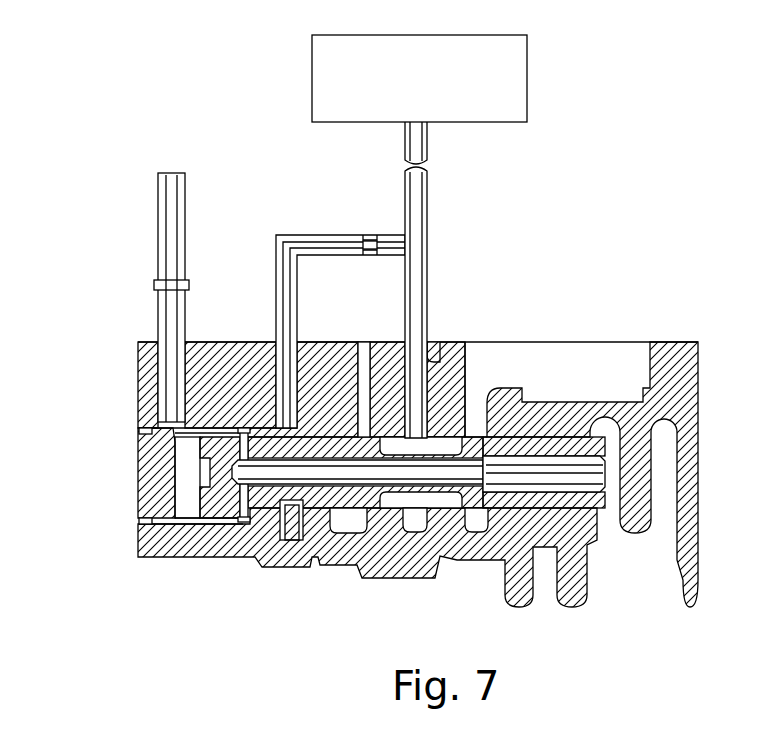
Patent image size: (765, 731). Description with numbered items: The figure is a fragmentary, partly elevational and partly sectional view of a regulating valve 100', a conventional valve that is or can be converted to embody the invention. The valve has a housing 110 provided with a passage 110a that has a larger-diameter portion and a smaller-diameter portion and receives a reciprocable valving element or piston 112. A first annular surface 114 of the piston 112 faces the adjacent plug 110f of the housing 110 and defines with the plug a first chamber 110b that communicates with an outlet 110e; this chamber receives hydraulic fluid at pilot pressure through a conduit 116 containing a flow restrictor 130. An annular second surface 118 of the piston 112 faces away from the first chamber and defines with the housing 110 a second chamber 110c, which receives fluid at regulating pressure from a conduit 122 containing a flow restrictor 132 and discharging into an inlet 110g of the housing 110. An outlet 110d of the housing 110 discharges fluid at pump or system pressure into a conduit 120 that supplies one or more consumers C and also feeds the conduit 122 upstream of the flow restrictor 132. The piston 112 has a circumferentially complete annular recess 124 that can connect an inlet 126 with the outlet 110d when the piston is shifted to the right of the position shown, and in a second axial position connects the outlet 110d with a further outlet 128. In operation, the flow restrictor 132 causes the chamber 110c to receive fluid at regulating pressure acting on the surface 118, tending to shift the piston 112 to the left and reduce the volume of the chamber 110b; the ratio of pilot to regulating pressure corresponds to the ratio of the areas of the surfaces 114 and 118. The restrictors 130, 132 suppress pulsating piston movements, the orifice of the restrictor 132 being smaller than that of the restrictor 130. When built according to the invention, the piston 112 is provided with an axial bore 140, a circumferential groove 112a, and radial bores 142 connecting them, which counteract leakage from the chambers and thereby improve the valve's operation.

The housing 110 is at (393, 577).
The passage 110a is at (212, 337).
The first chamber 110b is at (160, 420).
The second chamber 110c is at (297, 540).
The outlet 110d is at (443, 337).
The outlet 110e is at (138, 360).
The plug 110f is at (145, 503).
The inlet 110g is at (315, 337).
The piston 112 is at (243, 500).
The circumferential groove 112a is at (205, 437).
The first annular surface 114 is at (202, 520).
The conduit 116 is at (175, 212).
The second annular surface 118 is at (288, 508).
The conduit 120 is at (420, 200).
The conduit 122 is at (283, 293).
The annular recess 124 is at (443, 497).
The inlet 126 is at (483, 337).
The outlet 128 is at (345, 337).
The flow restrictor 130 is at (162, 288).
The flow restrictor 132 is at (370, 233).
The axial bore 140 is at (528, 478).
The radial bores 142 is at (212, 518).
The regulating valve 100' is at (619, 637).
The consumers C is at (530, 92).